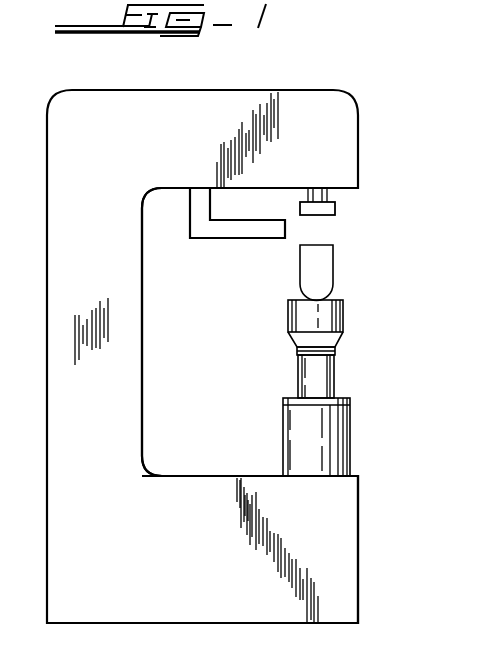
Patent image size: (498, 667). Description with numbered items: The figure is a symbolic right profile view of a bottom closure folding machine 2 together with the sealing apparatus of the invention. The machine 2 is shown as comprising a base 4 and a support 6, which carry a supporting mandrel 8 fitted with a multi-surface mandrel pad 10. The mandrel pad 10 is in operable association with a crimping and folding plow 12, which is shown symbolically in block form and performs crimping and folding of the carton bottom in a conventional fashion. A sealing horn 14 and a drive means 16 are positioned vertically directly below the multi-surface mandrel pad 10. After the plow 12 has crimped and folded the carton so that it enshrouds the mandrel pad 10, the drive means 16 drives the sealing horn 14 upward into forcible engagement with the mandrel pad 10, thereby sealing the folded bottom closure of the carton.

The bottom closure folding machine 2 is at (299, 82).
The base 4 is at (338, 515).
The support 6 is at (120, 293).
The supporting mandrel 8 is at (330, 197).
The multi-surface mandrel pad 10 is at (342, 213).
The crimping and folding plow 12 is at (285, 232).
The sealing horn 14 is at (350, 312).
The drive means 16 is at (335, 373).